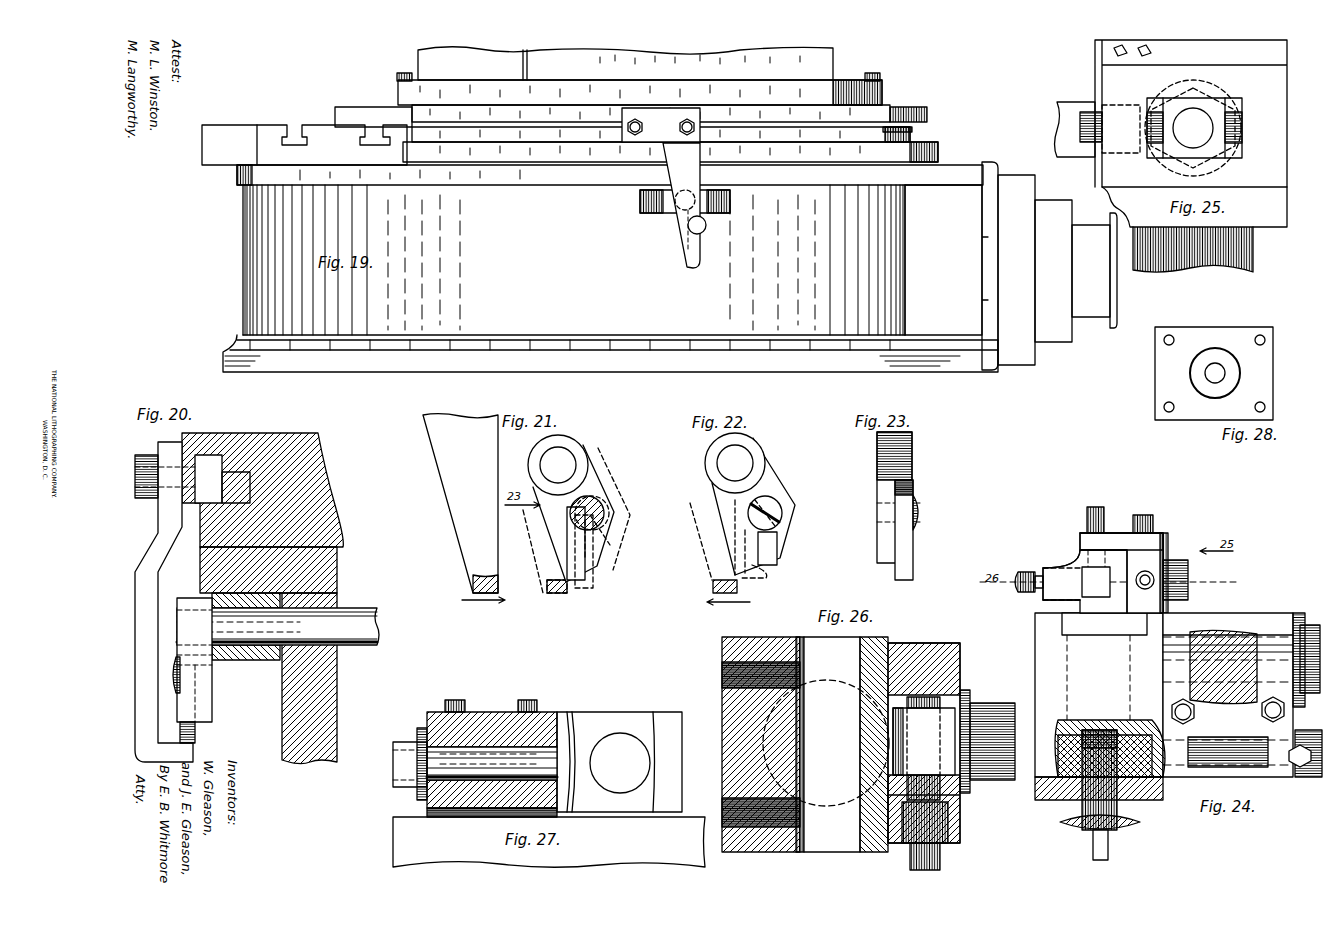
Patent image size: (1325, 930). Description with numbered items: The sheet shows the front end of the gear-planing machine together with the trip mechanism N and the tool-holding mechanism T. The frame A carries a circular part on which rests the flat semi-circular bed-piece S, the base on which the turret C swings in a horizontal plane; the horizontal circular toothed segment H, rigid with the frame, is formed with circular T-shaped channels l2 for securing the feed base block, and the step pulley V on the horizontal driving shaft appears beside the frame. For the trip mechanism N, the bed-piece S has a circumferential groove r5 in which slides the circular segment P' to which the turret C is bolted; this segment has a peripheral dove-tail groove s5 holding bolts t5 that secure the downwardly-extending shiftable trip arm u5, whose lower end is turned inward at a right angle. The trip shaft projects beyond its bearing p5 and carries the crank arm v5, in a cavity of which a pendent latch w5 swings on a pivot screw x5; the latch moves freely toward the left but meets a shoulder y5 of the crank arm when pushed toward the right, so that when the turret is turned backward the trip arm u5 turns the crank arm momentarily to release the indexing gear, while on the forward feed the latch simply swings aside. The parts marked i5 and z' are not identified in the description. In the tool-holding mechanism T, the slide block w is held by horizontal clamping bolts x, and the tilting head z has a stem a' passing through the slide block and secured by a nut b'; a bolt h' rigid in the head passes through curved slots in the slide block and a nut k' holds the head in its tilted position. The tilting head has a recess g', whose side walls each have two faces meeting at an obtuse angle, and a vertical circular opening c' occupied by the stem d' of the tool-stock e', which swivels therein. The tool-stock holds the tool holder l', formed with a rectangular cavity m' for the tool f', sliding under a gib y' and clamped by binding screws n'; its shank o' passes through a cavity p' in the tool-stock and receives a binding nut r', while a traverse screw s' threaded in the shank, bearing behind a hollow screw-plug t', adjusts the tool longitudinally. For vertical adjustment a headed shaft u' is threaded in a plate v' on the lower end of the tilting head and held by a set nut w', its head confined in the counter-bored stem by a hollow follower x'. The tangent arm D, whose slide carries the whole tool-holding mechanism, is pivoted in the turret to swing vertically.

In FIG. 19, the turret C is at (625, 63).
In FIG. 19, the circular segment P' is at (651, 104).
In FIG. 20, the circular segment P' is at (208, 455).
In FIG. 19, the circumferential groove r5 is at (925, 128).
In FIG. 20, the circumferential groove r5 is at (250, 487).
In FIG. 19, the dove-tail groove s5 is at (535, 132).
In FIG. 20, the dove-tail groove s5 is at (198, 498).
In FIG. 19, the bed-piece S is at (348, 110).
In FIG. 20, the bed-piece S is at (322, 485).
In FIG. 19, the circular toothed segment H is at (304, 145).
In FIG. 19, the T-shaped channels l2 is at (295, 128).
In FIG. 19, the frame A is at (610, 268).
In FIG. 20, the frame A is at (330, 680).
In FIG. 19, the step pulley V is at (1053, 271).
In FIG. 19, the bolts t5 is at (641, 127).
In FIG. 20, the bolts t5 is at (133, 477).
In FIG. 19, the bearing p5 is at (645, 192).
In FIG. 20, the bearing p5 is at (250, 652).
In FIG. 19, the trip arm u5 is at (681, 205).
In FIG. 20, the trip arm u5 is at (145, 647).
In FIG. 21, the trip arm u5 is at (563, 600).
In FIG. 22, the trip arm u5 is at (712, 588).
In FIG. 19, the crank arm v5 is at (703, 242).
In FIG. 20, the crank arm v5 is at (205, 698).
In FIG. 21, the crank arm v5 is at (580, 447).
In FIG. 22, the crank arm v5 is at (772, 478).
In FIG. 23, the crank arm v5 is at (882, 488).
In FIG. 19, the pivot screw x5 is at (707, 225).
In FIG. 20, the pivot screw x5 is at (172, 675).
In FIG. 21, the pivot screw x5 is at (600, 508).
In FIG. 22, the pivot screw x5 is at (778, 520).
In FIG. 23, the pivot screw x5 is at (920, 510).
In FIG. 19, the trip mechanism N is at (660, 231).
In FIG. 20, the pivot stud i5 is at (356, 616).
In FIG. 21, the pivot stud i5 is at (558, 465).
In FIG. 22, the pivot stud i5 is at (735, 463).
In FIG. 20, the latch w5 is at (197, 730).
In FIG. 21, the latch w5 is at (590, 578).
In FIG. 22, the latch w5 is at (748, 582).
In FIG. 23, the latch w5 is at (908, 578).
In FIG. 21, the shoulder y5 is at (588, 545).
In FIG. 22, the shoulder y5 is at (778, 550).
In FIG. 25, the square lugs z' is at (1152, 54).
In FIG. 24, the square lugs z' is at (1169, 564).
In FIG. 25, the tool-holding mechanism T is at (1080, 88).
In FIG. 28, the tool-holding mechanism T is at (1142, 396).
In FIG. 27, the tool-holding mechanism T is at (554, 757).
In FIG. 26, the tool-holding mechanism T is at (919, 638).
In FIG. 24, the tool-holding mechanism T is at (1228, 687).
In FIG. 25, the tool f' is at (1066, 129).
In FIG. 25, the tool holder l' is at (1111, 141).
In FIG. 26, the tool holder l' is at (763, 732).
In FIG. 24, the tool holder l' is at (1103, 573).
In FIG. 25, the shank o' is at (1188, 132).
In FIG. 26, the shank o' is at (924, 741).
In FIG. 25, the tool-stock e' is at (1210, 128).
In FIG. 26, the tool-stock e' is at (922, 744).
In FIG. 24, the tool-stock e' is at (1104, 624).
In FIG. 25, the traverse screw s' is at (1207, 131).
In FIG. 26, the traverse screw s' is at (916, 856).
In FIG. 24, the traverse screw s' is at (1143, 592).
In FIG. 25, the rectangular cavity p' is at (1250, 95).
In FIG. 26, the rectangular cavity p' is at (977, 735).
In FIG. 24, the rectangular cavity p' is at (988, 685).
In FIG. 25, the plate or gib y' is at (1237, 74).
In FIG. 24, the plate or gib y' is at (1121, 526).
In FIG. 25, the stem of tool-stock d' is at (1193, 260).
In FIG. 24, the stem of tool-stock d' is at (1100, 750).
In FIG. 28, the plate v' is at (1214, 365).
In FIG. 24, the plate v' is at (1067, 780).
In FIG. 27, the tangent arm D is at (549, 842).
In FIG. 27, the slide block w is at (492, 749).
In FIG. 24, the slide block w is at (1234, 660).
In FIG. 27, the stem of tilting head a' is at (492, 763).
In FIG. 24, the stem of tilting head a' is at (1228, 666).
In FIG. 27, the nut b' is at (410, 759).
In FIG. 24, the nut b' is at (1310, 645).
In FIG. 27, the clamping bolts x is at (491, 696).
In FIG. 24, the clamping bolts x is at (1228, 710).
In FIG. 27, the recess g' is at (581, 762).
In FIG. 24, the recess g' is at (1054, 628).
In FIG. 27, the vertical circular opening c' is at (620, 763).
In FIG. 27, the tilting head z is at (662, 762).
In FIG. 24, the tilting head z is at (1099, 695).
In FIG. 26, the rectangular cavity m' is at (826, 744).
In FIG. 24, the rectangular cavity m' is at (1095, 589).
In FIG. 26, the binding nut r' is at (992, 753).
In FIG. 24, the binding nut r' is at (1186, 585).
In FIG. 26, the hollow screw-plug t' is at (931, 834).
In FIG. 24, the hollow screw-plug t' is at (1145, 569).
In FIG. 24, the binding screws n' is at (1081, 540).
In FIG. 24, the bolt h' is at (1228, 765).
In FIG. 24, the nut k' is at (1305, 765).
In FIG. 24, the hollow follower x' is at (1095, 779).
In FIG. 24, the set nut w' is at (1116, 830).
In FIG. 24, the headed shaft u' is at (1111, 845).